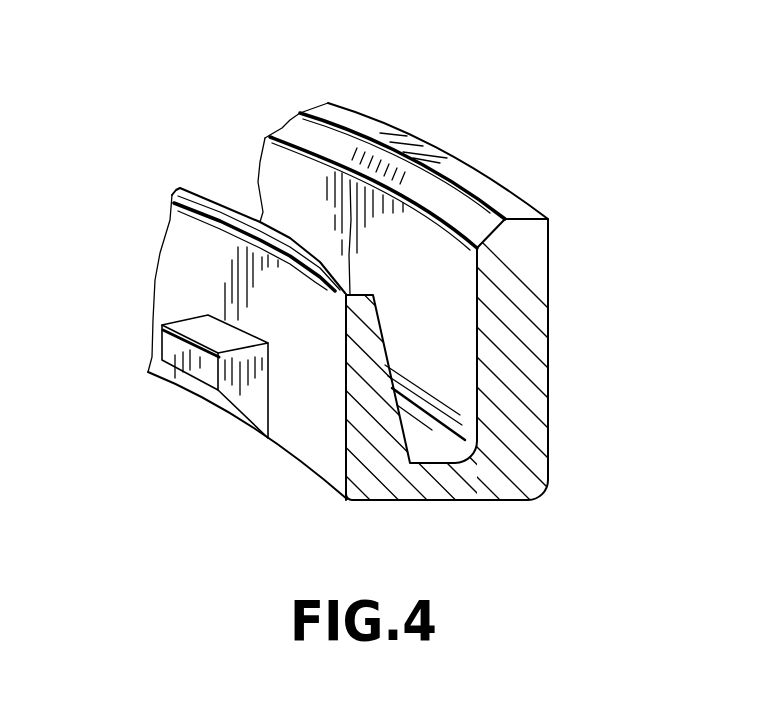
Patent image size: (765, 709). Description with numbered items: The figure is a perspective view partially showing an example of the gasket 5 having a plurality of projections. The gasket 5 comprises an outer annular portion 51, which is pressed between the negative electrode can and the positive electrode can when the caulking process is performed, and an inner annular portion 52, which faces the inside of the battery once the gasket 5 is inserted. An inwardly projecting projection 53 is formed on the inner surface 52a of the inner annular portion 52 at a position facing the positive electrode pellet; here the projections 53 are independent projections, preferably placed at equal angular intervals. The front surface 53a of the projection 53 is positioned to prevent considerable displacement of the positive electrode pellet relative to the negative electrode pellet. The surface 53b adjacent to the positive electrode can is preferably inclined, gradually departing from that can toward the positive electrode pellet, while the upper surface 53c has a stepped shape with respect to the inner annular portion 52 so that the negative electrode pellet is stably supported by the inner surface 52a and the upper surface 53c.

The gasket 5 is at (458, 125).
The outer annular portion 51 is at (523, 350).
The inner annular portion 52 is at (367, 417).
The inner surface 52a is at (183, 242).
The projection 53 is at (240, 388).
The front surface 53a is at (172, 350).
The surface adjacent to the positive electrode can 53b is at (203, 390).
The upper surface 53c is at (195, 328).